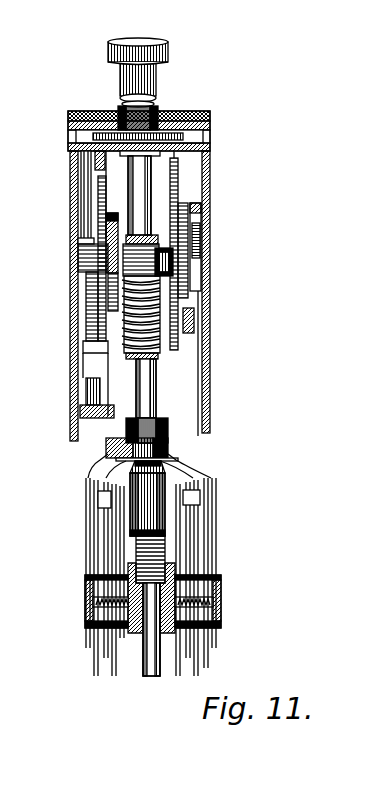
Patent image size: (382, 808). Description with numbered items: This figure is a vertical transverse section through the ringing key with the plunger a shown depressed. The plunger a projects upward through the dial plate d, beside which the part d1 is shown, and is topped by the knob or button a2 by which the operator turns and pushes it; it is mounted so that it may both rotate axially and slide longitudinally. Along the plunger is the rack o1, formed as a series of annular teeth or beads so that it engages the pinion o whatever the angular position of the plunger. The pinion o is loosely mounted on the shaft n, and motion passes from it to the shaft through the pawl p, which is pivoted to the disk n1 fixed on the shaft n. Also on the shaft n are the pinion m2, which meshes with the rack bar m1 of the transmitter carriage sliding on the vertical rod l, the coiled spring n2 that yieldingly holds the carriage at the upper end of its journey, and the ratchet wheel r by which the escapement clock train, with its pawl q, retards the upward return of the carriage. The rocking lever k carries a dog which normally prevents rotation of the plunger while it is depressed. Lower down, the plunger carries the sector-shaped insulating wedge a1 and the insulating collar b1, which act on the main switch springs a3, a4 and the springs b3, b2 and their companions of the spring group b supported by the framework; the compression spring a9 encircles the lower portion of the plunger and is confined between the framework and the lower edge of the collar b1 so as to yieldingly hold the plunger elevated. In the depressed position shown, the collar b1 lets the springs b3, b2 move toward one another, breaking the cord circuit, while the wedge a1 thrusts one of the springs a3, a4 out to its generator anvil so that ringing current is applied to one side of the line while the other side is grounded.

The plunger a is at (157, 388).
The sector-shaped wedge piece a1 is at (150, 431).
The knob or button a2 is at (153, 44).
The contact spring a3 is at (100, 438).
The contact spring a4 is at (178, 444).
The compression spring a9 is at (170, 556).
The brush holder b is at (153, 619).
The insulating collar b1 is at (122, 520).
The right wires b2 is at (192, 500).
The contact spring b3 is at (105, 508).
The dial plate d is at (62, 104).
The washer d1 is at (150, 93).
The rocking lever k is at (62, 158).
The vertical rod l is at (78, 381).
The rack bar m1 is at (80, 296).
The pinion m2 is at (82, 243).
The shaft n is at (182, 262).
The disk n1 is at (95, 198).
The coiled spring n2 is at (195, 247).
The pinion o is at (141, 231).
The rack o1 is at (152, 338).
The pawl p is at (105, 208).
The pawl q is at (180, 326).
The ratchet wheel r is at (171, 206).